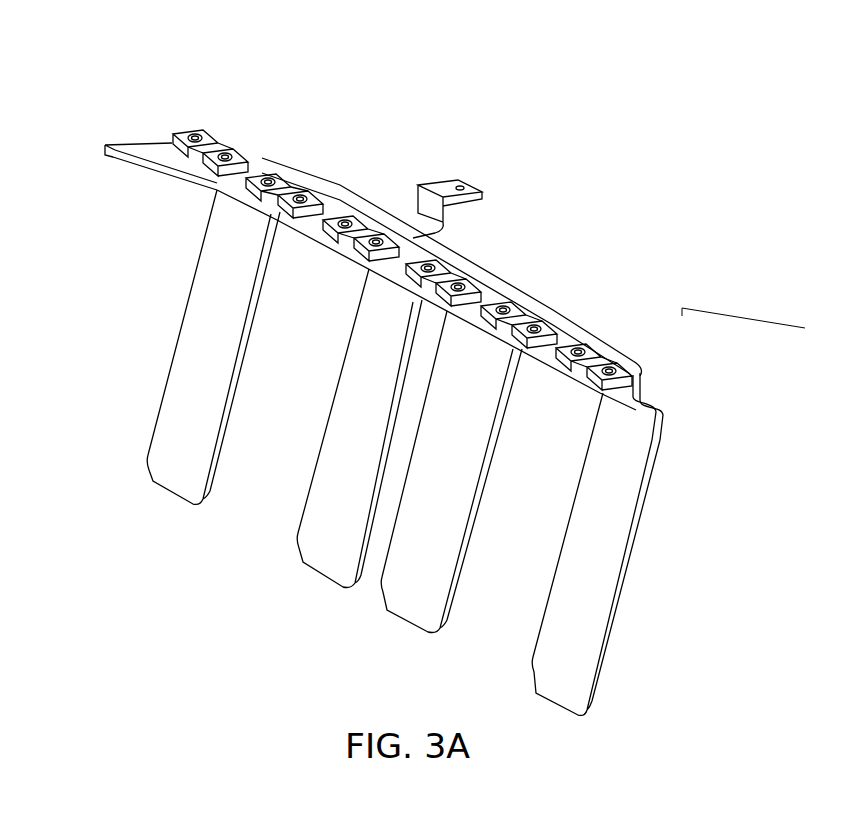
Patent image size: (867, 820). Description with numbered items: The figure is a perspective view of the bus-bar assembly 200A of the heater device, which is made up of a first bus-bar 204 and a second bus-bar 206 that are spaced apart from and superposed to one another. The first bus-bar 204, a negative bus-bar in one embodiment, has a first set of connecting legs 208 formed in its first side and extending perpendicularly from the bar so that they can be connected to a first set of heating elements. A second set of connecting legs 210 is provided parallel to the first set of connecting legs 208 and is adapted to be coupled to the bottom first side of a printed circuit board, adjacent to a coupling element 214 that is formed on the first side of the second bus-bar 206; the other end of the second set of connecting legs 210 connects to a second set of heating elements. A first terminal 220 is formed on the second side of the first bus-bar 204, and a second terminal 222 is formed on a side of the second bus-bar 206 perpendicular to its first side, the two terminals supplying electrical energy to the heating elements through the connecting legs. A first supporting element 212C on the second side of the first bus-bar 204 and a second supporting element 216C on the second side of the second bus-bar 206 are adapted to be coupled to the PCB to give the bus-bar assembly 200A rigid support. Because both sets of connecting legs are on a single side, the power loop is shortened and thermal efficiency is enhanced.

The bus-bar assembly 200A is at (156, 273).
The second terminal 222 is at (167, 153).
The second bus-bar 206 is at (377, 207).
The first bus-bar 204 is at (533, 295).
The coupling element 214 is at (275, 190).
The second supporting element 216C is at (435, 192).
The first supporting element 212C is at (652, 295).
The first terminal 220 is at (723, 295).
The first set of connecting legs 208 is at (570, 453).
The second set of connecting legs 210 is at (583, 570).